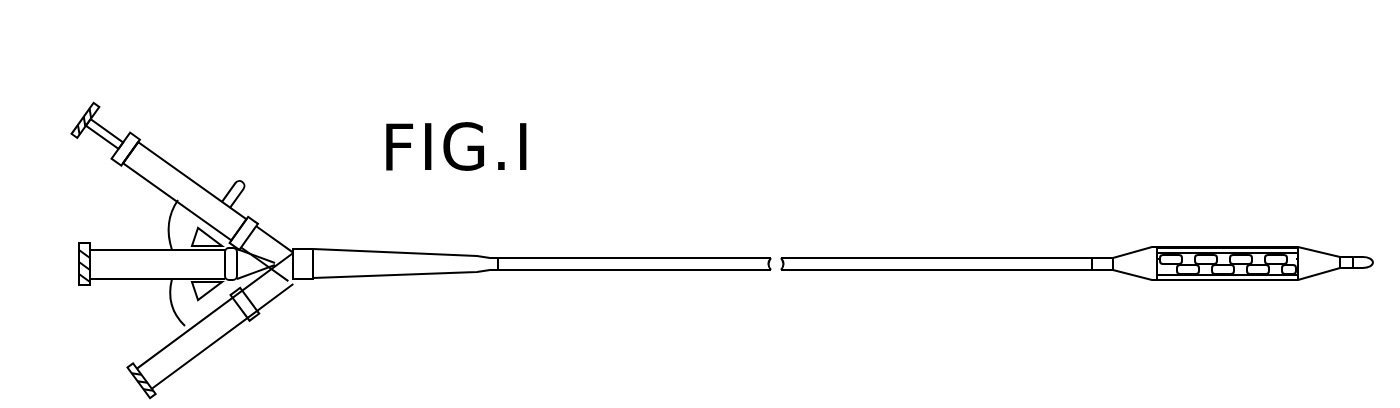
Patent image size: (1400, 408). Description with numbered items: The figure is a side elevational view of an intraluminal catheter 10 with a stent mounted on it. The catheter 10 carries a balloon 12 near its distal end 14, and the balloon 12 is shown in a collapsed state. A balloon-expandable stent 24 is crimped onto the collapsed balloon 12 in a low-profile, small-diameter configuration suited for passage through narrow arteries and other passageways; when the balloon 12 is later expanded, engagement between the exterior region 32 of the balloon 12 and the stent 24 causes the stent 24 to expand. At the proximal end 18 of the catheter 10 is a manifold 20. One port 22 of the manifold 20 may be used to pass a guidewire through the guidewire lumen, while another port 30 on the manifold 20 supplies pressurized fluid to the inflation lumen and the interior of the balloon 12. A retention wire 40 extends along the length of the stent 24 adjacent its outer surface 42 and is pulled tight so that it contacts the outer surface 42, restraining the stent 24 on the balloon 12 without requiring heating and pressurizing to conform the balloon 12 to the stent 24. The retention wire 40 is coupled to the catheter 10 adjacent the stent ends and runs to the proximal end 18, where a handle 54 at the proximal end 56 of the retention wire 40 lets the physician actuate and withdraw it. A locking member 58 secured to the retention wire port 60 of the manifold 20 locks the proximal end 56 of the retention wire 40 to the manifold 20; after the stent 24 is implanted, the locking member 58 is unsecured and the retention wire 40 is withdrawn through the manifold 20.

The intraluminal catheter 10 is at (597, 240).
The balloon 12 is at (1136, 280).
The distal end 14 is at (1379, 246).
The proximal end 18 is at (185, 158).
The manifold 20 is at (266, 221).
The port 22 is at (119, 285).
The balloon-expandable stent 24 is at (1307, 263).
The port 30 is at (222, 339).
The exterior region 32 is at (1306, 287).
The retention wire 40 is at (1141, 245).
The outer surface 42 is at (1226, 243).
The handle 54 is at (100, 97).
The proximal end 56 is at (115, 128).
The locking member 58 is at (241, 181).
The retention wire port 60 is at (157, 148).